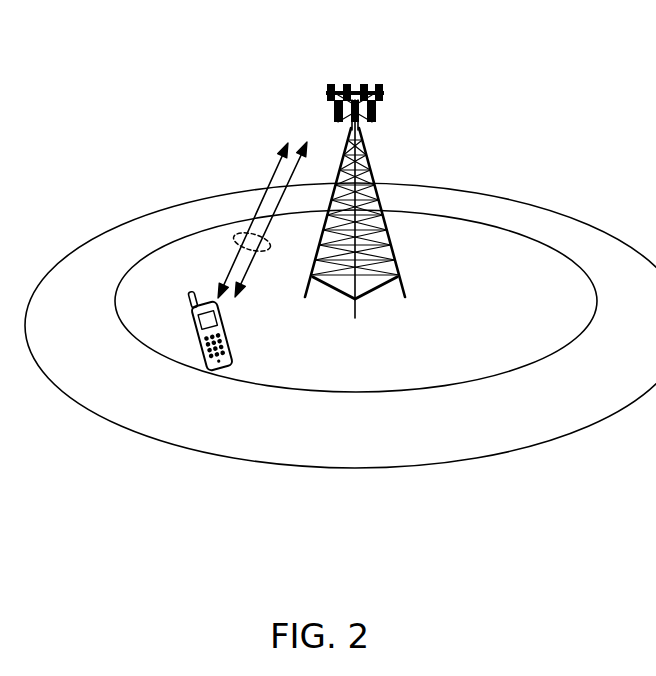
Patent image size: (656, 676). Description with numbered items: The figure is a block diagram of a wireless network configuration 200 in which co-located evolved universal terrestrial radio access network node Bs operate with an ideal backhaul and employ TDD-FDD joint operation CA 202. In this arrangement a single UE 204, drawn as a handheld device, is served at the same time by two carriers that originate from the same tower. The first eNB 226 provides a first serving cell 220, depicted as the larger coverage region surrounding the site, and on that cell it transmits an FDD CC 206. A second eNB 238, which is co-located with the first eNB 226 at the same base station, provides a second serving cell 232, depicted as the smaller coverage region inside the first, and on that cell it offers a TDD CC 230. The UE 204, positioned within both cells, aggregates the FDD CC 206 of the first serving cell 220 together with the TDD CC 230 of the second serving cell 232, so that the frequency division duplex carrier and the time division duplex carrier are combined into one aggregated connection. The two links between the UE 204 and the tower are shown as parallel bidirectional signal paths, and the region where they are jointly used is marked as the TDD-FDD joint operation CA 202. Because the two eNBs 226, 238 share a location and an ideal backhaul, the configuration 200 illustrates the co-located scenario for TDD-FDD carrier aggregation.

The wireless network configuration 200 is at (216, 83).
The TDD-FDD joint operation CA 202 is at (255, 220).
The UE 204 is at (238, 337).
The FDD CC 206 is at (233, 268).
The first serving cell 220 is at (383, 460).
The first eNB 226 is at (365, 169).
The TDD CC 230 is at (242, 276).
The second serving cell 232 is at (383, 385).
The second eNB 238 is at (363, 80).